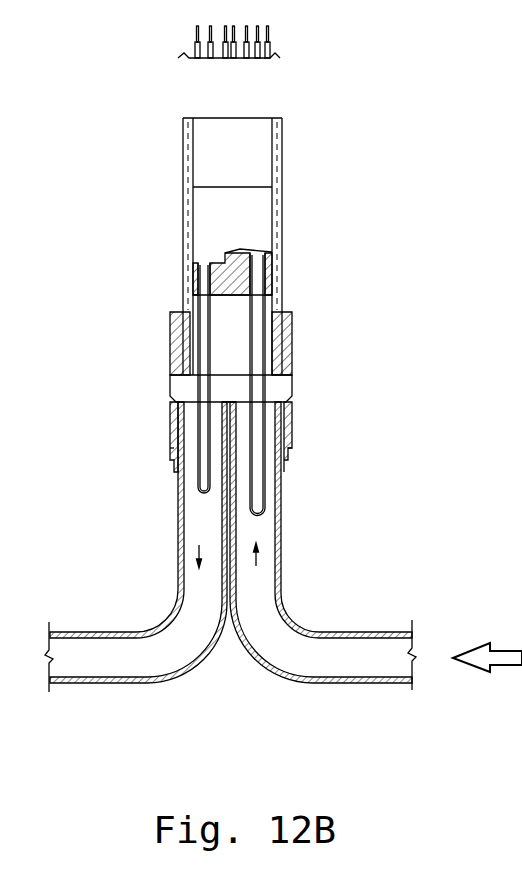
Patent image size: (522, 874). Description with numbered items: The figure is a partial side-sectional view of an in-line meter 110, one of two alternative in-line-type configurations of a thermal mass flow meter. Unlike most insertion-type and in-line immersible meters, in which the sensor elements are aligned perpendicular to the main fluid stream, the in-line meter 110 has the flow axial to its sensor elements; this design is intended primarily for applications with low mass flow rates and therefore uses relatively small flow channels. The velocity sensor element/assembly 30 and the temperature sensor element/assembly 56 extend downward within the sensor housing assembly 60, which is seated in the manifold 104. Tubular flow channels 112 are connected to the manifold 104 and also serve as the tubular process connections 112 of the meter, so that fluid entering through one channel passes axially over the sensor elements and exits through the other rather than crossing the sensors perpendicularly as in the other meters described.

The in-line meter 110 is at (342, 308).
The sensor housing assembly 60 is at (276, 218).
The manifold 104 is at (291, 434).
The temperature sensor element/assembly 56 is at (198, 450).
The velocity sensor element/assembly 30 is at (264, 489).
The tubular flow channels 112 is at (102, 683).